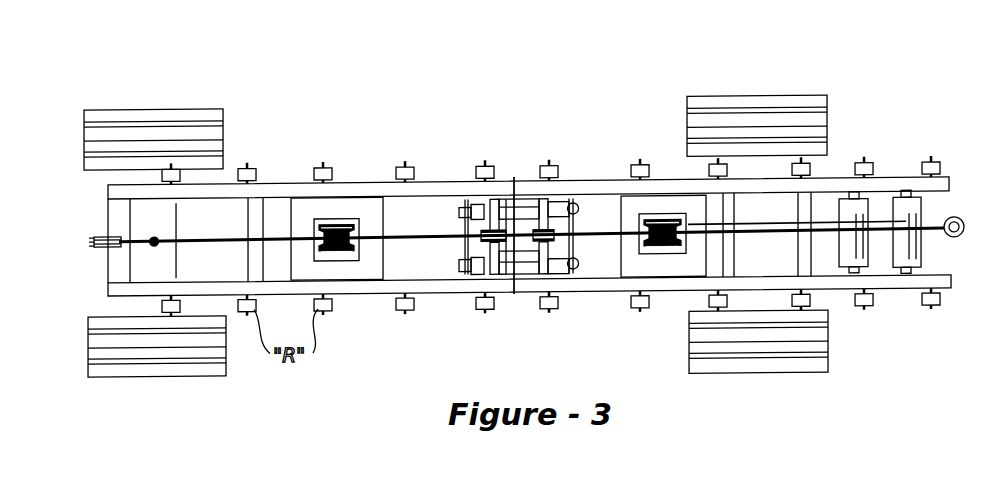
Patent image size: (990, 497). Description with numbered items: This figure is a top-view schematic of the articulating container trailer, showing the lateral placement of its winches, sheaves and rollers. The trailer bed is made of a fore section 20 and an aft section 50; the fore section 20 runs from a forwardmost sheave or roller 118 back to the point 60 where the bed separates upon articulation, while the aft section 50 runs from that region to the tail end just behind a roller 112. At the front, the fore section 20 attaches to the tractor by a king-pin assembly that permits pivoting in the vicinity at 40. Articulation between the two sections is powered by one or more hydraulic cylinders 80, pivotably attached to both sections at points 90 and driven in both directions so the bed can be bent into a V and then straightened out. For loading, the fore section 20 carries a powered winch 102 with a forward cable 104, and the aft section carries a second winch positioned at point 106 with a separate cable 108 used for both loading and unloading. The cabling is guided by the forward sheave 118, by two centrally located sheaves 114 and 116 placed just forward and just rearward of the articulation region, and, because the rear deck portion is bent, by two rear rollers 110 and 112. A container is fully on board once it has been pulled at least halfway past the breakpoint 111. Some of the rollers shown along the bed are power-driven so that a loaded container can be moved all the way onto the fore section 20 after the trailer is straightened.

The fore section 20 is at (352, 92).
The aft section 50 is at (585, 77).
The king-pin pivoting vicinity 40 is at (153, 238).
The separation point 60 is at (517, 233).
The hydraulic cylinders 80 is at (478, 213).
The pivot attachment points 90 is at (458, 217).
The powered winch 102 is at (355, 224).
The forward cable 104 is at (745, 248).
The second winch 106 is at (660, 240).
The cable 108 is at (792, 230).
The roller 110 is at (845, 218).
The breakpoint 111 is at (878, 300).
The roller 112 is at (897, 216).
The sheave 114 is at (505, 232).
The sheave 116 is at (567, 219).
The forward sheave 118 is at (100, 235).